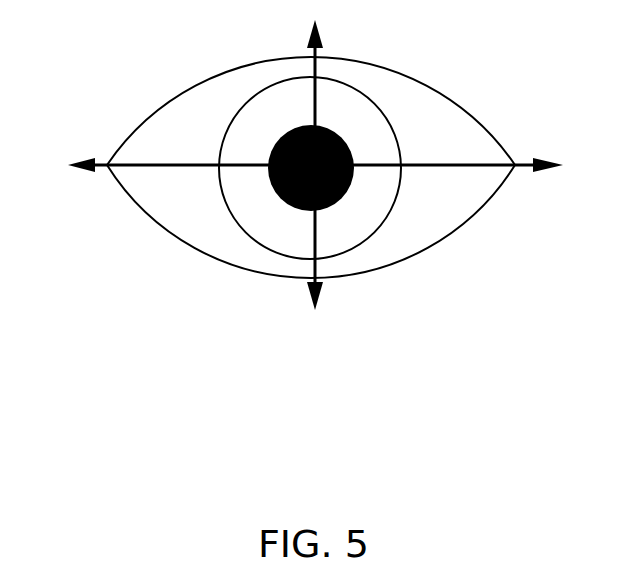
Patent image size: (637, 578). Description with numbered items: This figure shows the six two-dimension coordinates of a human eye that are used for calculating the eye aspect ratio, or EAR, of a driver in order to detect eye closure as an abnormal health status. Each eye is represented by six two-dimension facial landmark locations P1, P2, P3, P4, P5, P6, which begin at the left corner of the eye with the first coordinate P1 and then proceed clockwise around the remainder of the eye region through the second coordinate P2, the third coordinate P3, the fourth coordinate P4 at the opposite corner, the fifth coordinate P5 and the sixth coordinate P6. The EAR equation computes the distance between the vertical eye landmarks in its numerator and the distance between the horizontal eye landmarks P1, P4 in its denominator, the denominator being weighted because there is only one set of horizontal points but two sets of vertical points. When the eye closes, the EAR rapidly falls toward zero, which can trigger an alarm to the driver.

The first two-dimension coordinate P1 is at (60, 167).
The second two-dimension coordinate P2 is at (209, 104).
The third two-dimension coordinate P3 is at (413, 111).
The fourth two-dimension coordinate P4 is at (569, 165).
The fifth two-dimension coordinate P5 is at (413, 227).
The sixth two-dimension coordinate P6 is at (209, 227).